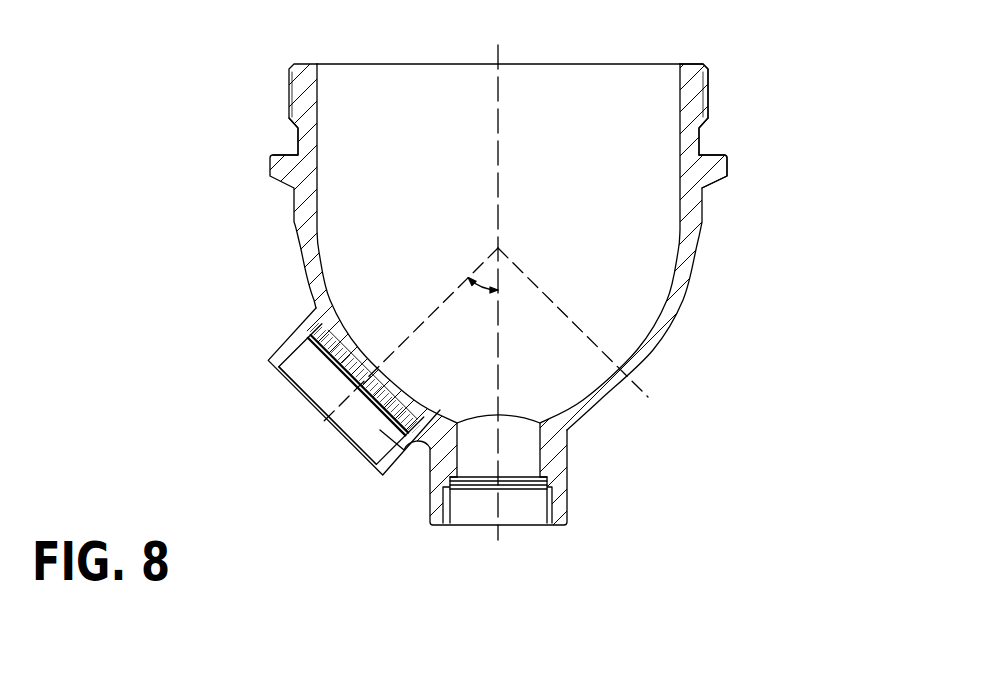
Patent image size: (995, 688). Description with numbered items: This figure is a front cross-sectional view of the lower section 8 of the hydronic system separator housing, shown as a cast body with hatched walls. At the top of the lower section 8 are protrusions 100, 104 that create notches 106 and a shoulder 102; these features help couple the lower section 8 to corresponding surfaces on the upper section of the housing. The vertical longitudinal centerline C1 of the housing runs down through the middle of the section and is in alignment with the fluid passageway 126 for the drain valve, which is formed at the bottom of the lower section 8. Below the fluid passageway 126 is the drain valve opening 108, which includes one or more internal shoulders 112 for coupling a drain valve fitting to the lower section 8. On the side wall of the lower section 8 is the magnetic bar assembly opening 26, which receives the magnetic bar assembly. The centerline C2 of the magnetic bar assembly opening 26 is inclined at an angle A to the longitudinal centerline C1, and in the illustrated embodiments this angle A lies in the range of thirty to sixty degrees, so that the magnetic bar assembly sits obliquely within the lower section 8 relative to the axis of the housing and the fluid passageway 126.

The lower section 8 is at (683, 297).
The magnetic bar assembly opening 26 is at (327, 358).
The protrusion 100 is at (713, 168).
The shoulder 102 is at (708, 148).
The protrusion 104 is at (697, 90).
The notch 106 is at (300, 147).
The drain valve opening 108 is at (552, 502).
The internal shoulder 112 is at (443, 502).
The fluid passageway 126 is at (522, 457).
The angle A is at (345, 428).
The longitudinal centerline C1 is at (498, 128).
The centerline C2 is at (427, 312).